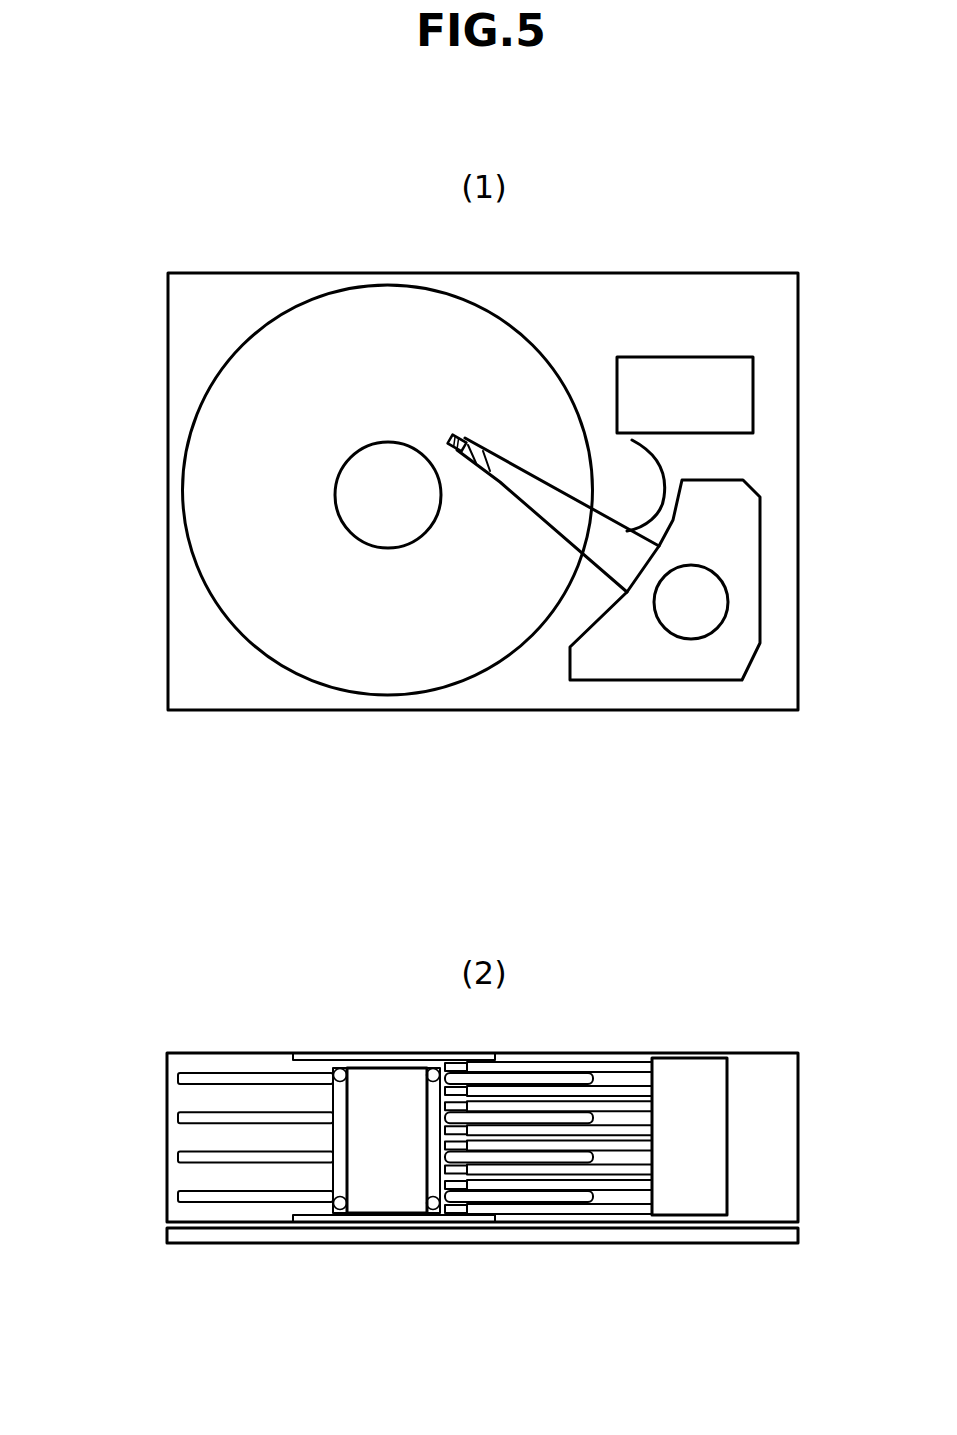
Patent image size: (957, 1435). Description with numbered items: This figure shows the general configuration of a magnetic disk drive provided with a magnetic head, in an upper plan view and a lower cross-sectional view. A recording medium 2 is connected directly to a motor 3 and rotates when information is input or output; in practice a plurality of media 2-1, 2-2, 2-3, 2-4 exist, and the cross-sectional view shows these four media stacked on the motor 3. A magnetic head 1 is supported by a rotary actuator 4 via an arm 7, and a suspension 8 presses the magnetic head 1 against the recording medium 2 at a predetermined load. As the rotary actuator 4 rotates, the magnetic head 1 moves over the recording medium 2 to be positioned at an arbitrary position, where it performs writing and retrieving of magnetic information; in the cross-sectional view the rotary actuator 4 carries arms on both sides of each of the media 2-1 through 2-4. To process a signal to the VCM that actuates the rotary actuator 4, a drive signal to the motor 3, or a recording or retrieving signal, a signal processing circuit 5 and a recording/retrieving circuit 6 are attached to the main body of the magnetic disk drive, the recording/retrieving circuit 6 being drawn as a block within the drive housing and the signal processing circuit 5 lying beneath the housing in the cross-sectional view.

The magnetic head 1 is at (460, 437).
The recording medium 2 is at (226, 436).
The recording medium 2-1 is at (193, 1079).
The recording medium 2-2 is at (385, 1117).
The recording medium 2-3 is at (385, 1157).
The recording medium 2-4 is at (193, 1195).
The motor 3 is at (368, 1193).
The rotary actuator 4 is at (725, 557).
The signal processing circuit 5 is at (707, 1235).
The recording/retrieving circuit 6 is at (727, 387).
The arm 7 is at (560, 522).
The suspension 8 is at (478, 466).